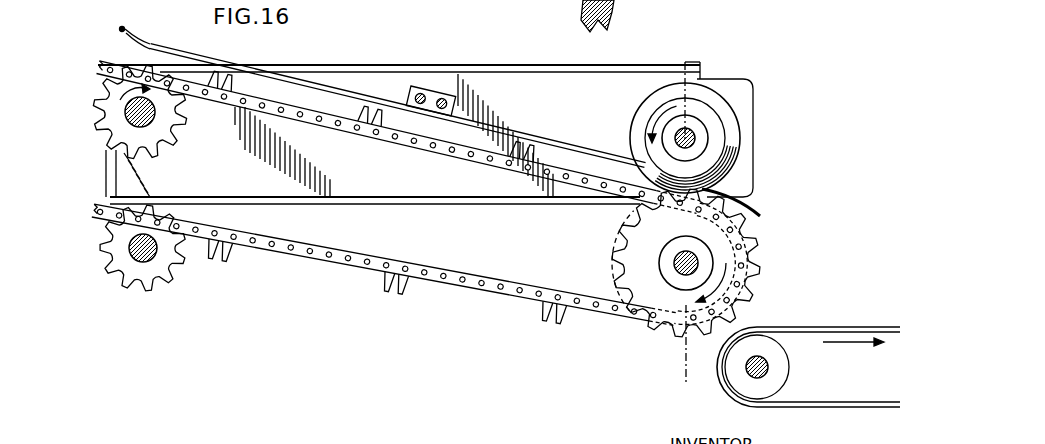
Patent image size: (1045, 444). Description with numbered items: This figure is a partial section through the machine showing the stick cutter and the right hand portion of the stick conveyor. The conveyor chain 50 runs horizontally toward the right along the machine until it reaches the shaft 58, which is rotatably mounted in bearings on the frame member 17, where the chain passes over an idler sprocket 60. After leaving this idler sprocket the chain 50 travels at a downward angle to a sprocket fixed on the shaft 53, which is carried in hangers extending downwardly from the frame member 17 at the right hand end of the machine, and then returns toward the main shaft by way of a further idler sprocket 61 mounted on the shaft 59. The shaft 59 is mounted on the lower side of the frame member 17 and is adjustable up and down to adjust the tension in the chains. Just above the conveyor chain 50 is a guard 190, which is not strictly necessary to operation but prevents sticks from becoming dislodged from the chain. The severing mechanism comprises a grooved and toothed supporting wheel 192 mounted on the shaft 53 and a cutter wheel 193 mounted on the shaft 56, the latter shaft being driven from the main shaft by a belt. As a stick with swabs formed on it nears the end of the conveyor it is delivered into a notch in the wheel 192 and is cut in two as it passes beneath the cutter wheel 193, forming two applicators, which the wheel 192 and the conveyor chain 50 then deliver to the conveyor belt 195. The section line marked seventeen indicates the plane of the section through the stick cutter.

The frame member 17 is at (700, 78).
The conveyor chain 50 is at (412, 137).
The shaft 53 is at (698, 262).
The shaft 56 is at (698, 139).
The shaft 58 is at (157, 128).
The shaft 59 is at (142, 262).
The idler sprocket 60 is at (172, 110).
The idler sprocket 61 is at (158, 262).
The guard 190 is at (493, 128).
The grooved and toothed supporting wheel 192 is at (614, 5).
The cutter wheel 193 is at (632, 124).
The conveyor belt 195 is at (805, 330).